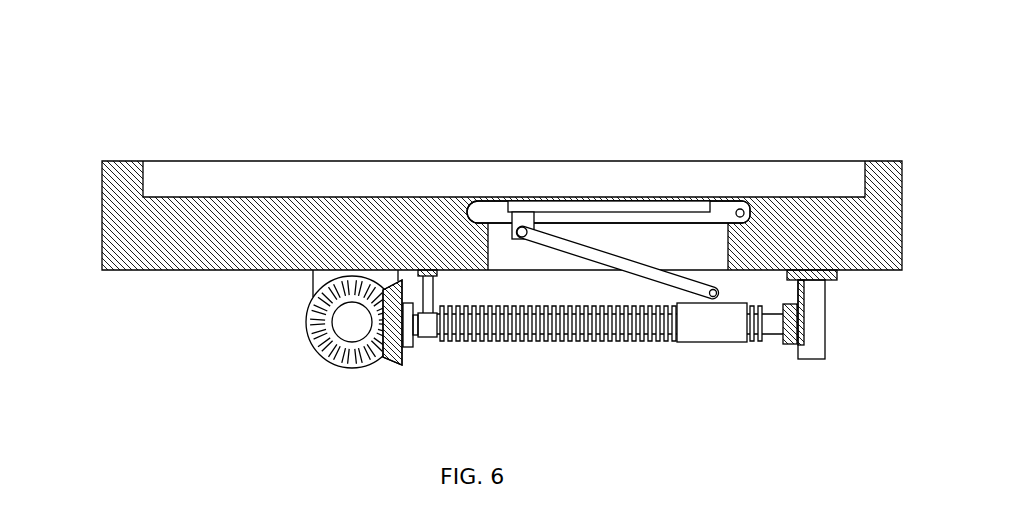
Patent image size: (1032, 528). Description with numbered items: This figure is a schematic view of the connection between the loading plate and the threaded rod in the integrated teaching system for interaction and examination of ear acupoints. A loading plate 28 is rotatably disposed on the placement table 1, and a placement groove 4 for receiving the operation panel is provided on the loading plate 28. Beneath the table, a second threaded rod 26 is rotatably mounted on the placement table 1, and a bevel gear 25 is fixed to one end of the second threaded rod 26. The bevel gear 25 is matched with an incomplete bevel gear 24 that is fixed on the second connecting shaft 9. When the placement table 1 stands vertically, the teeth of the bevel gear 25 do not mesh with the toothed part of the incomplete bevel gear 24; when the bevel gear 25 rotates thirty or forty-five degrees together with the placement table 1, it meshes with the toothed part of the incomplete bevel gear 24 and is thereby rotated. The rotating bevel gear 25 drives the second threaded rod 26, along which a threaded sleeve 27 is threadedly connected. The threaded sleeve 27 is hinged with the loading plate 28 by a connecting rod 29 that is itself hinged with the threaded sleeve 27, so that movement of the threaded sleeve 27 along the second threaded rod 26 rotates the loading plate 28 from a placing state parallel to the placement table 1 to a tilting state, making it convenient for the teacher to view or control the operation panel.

The placement table 1 is at (110, 197).
The placement groove 4 is at (541, 206).
The second connecting shaft 9 is at (339, 329).
The incomplete bevel gear 24 is at (306, 317).
The bevel gear 25 is at (404, 366).
The second threaded rod 26 is at (509, 341).
The threaded sleeve 27 is at (717, 344).
The loading plate 28 is at (486, 206).
The connecting rod 29 is at (594, 247).